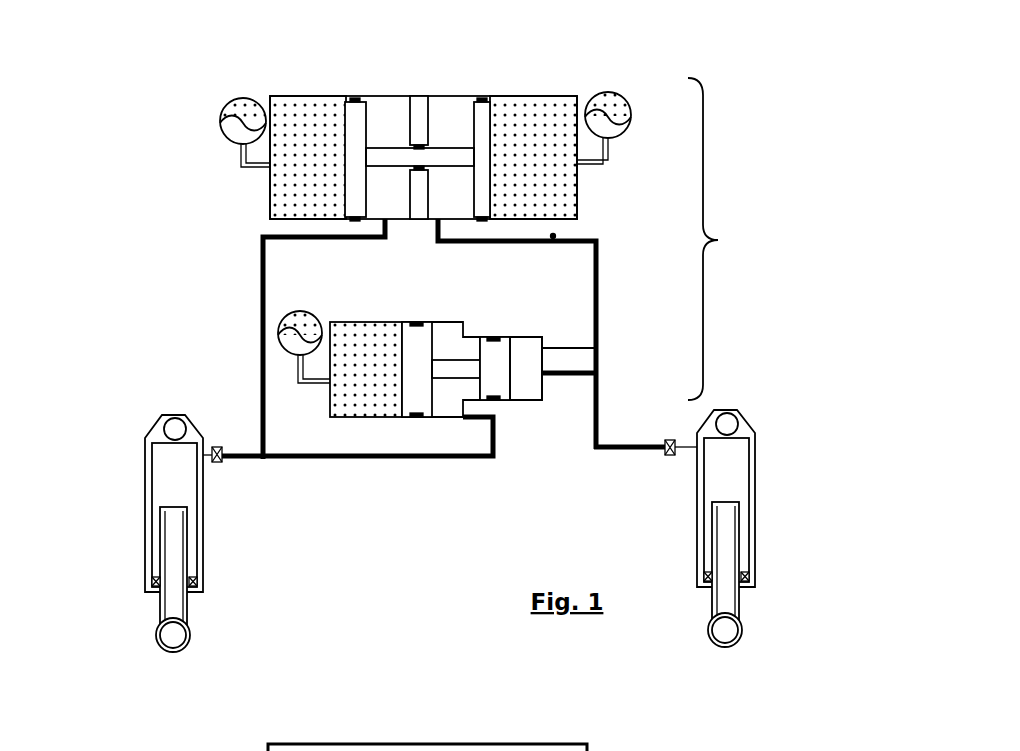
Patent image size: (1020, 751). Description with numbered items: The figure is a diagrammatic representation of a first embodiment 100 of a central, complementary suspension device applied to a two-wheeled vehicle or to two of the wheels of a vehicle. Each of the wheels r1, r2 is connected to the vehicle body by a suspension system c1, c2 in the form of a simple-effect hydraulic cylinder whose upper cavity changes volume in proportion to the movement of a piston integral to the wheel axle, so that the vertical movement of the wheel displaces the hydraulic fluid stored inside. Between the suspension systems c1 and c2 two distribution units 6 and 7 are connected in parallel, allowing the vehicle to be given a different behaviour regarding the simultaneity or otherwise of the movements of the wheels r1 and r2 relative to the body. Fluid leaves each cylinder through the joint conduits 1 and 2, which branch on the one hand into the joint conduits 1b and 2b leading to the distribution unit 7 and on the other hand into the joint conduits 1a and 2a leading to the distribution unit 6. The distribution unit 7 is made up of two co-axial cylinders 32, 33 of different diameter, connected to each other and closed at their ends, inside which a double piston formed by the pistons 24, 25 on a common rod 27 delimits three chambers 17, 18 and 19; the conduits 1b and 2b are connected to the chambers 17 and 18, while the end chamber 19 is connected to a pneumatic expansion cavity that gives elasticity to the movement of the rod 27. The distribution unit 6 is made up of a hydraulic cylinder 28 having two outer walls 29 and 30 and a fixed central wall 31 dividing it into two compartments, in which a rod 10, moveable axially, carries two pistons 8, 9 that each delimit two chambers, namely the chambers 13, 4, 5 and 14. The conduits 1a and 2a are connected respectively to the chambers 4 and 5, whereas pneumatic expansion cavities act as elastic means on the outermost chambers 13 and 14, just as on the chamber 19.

The joint conduit 1 is at (237, 458).
The joint conduit 1a is at (261, 312).
The joint conduit 1b is at (350, 458).
The joint conduit 2 is at (630, 452).
The joint conduit 2a is at (597, 311).
The joint conduit 2b is at (562, 373).
The chamber 4 is at (395, 108).
The chamber 5 is at (448, 193).
The distribution unit 6 is at (194, 133).
The distribution unit 7 is at (249, 357).
The piston 8 is at (357, 137).
The piston 9 is at (483, 125).
The rod 10 is at (447, 155).
The chamber 13 is at (297, 153).
The chamber 14 is at (525, 130).
The chamber 17 is at (520, 385).
The chamber 18 is at (442, 397).
The end chamber 19 is at (357, 393).
The piston 24 is at (500, 355).
The piston 25 is at (413, 348).
The common rod 27 is at (452, 367).
The hydraulic cylinder 28 is at (453, 94).
The outer wall 29 is at (573, 180).
The outer wall 30 is at (263, 218).
The fixed central wall 31 is at (419, 120).
The cylinder 32 is at (332, 322).
The cylinder 33 is at (545, 349).
The first embodiment 100 is at (734, 239).
The suspension system c1 is at (146, 512).
The suspension system c2 is at (752, 508).
The wheel r1 is at (173, 660).
The wheel r2 is at (727, 658).